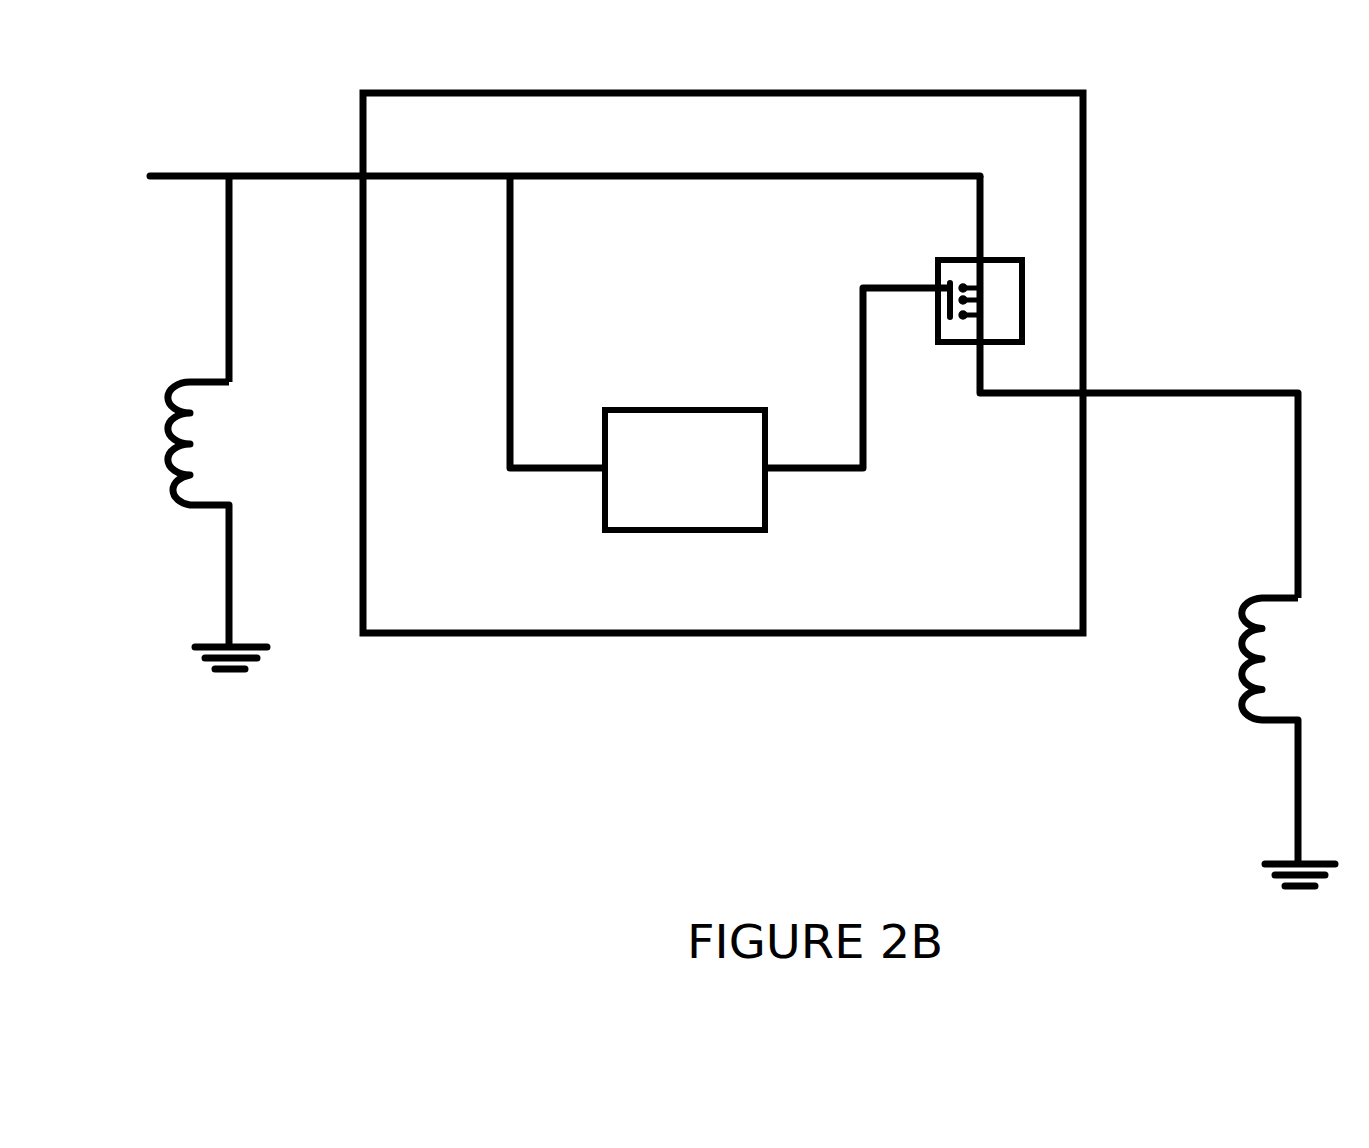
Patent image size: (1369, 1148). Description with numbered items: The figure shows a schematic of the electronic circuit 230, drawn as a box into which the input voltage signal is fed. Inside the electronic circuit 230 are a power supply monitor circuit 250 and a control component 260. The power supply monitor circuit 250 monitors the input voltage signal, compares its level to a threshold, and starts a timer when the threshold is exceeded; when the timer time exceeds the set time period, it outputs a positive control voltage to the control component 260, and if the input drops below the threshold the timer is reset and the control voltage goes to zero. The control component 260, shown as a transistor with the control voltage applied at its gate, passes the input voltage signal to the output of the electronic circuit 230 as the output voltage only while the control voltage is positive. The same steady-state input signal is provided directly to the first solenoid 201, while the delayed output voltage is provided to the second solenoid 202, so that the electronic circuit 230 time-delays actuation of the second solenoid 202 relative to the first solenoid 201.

The first solenoid 201 is at (168, 362).
The second solenoid 202 is at (1236, 577).
The electronic circuit 230 is at (430, 92).
The power supply monitor circuit 250 is at (715, 410).
The control component 260 is at (957, 258).